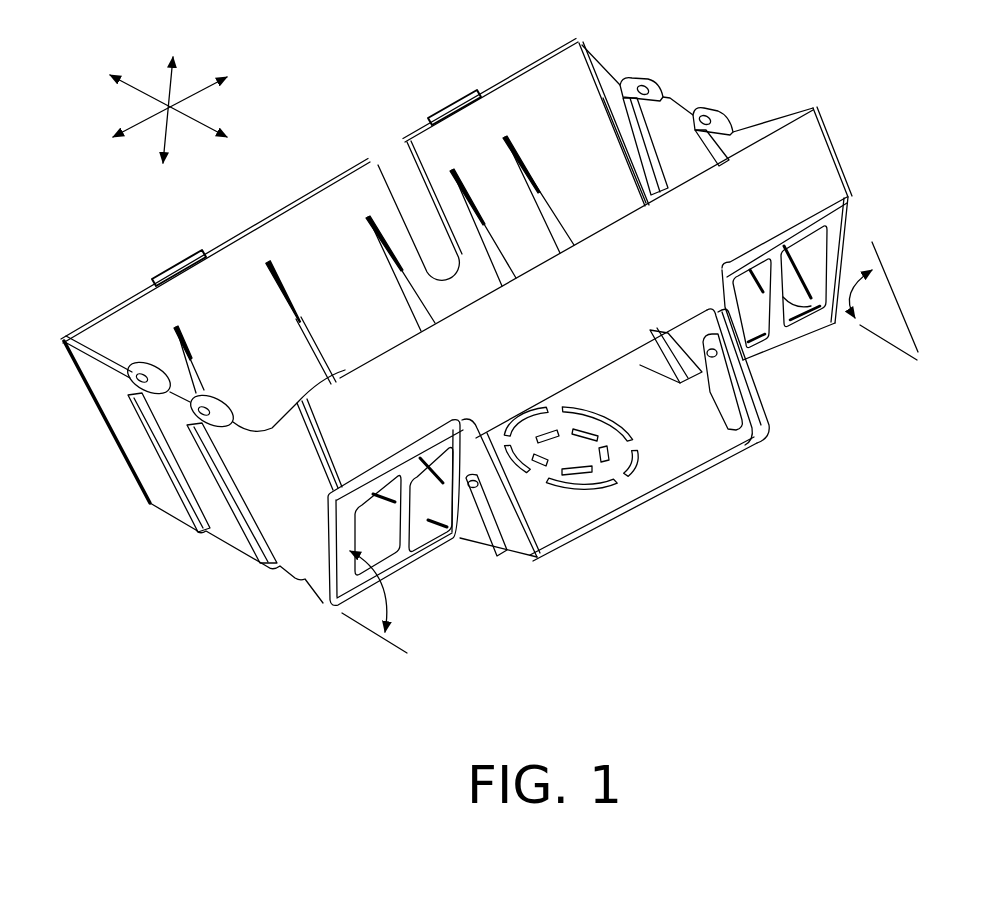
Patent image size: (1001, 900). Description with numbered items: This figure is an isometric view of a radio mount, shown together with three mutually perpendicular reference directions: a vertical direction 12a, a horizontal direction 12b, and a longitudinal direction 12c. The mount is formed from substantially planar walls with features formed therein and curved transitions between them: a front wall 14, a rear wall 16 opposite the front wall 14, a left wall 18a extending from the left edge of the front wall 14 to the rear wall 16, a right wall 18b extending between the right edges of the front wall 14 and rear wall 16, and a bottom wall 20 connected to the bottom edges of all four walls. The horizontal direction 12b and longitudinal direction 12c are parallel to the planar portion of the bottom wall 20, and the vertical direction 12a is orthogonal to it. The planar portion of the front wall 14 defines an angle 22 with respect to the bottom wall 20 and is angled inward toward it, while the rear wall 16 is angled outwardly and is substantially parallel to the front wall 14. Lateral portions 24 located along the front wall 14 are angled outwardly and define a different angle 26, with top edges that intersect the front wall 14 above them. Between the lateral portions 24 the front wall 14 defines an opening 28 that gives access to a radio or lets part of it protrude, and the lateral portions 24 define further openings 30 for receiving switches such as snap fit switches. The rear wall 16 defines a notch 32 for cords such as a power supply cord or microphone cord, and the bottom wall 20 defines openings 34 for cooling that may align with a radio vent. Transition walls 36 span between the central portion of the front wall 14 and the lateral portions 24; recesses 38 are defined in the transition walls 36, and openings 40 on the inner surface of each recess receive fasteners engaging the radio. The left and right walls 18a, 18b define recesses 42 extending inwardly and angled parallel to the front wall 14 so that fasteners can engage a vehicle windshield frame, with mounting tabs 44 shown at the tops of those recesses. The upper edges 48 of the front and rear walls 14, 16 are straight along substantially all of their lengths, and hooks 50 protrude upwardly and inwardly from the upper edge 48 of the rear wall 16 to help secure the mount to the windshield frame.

The vertical direction 12a is at (177, 73).
The horizontal direction 12b is at (220, 83).
The longitudinal direction 12c is at (123, 80).
The front wall 14 is at (536, 342).
The rear wall 16 is at (314, 270).
The left wall 18a is at (261, 482).
The right wall 18b is at (610, 80).
The bottom wall 20 is at (615, 397).
The angle 22 is at (895, 303).
The lateral portions 24 is at (833, 320).
The angle 26 is at (392, 605).
The opening 28 is at (563, 552).
The openings 30 is at (773, 263).
The notch 32 is at (433, 193).
The openings 34 is at (640, 445).
The transition walls 36 is at (477, 447).
The recesses 38 is at (753, 445).
The openings 40 is at (710, 323).
The recesses 42 is at (657, 128).
The mounting tabs 44 is at (647, 86).
The upper edges 48 is at (290, 203).
The hooks 50 is at (173, 265).